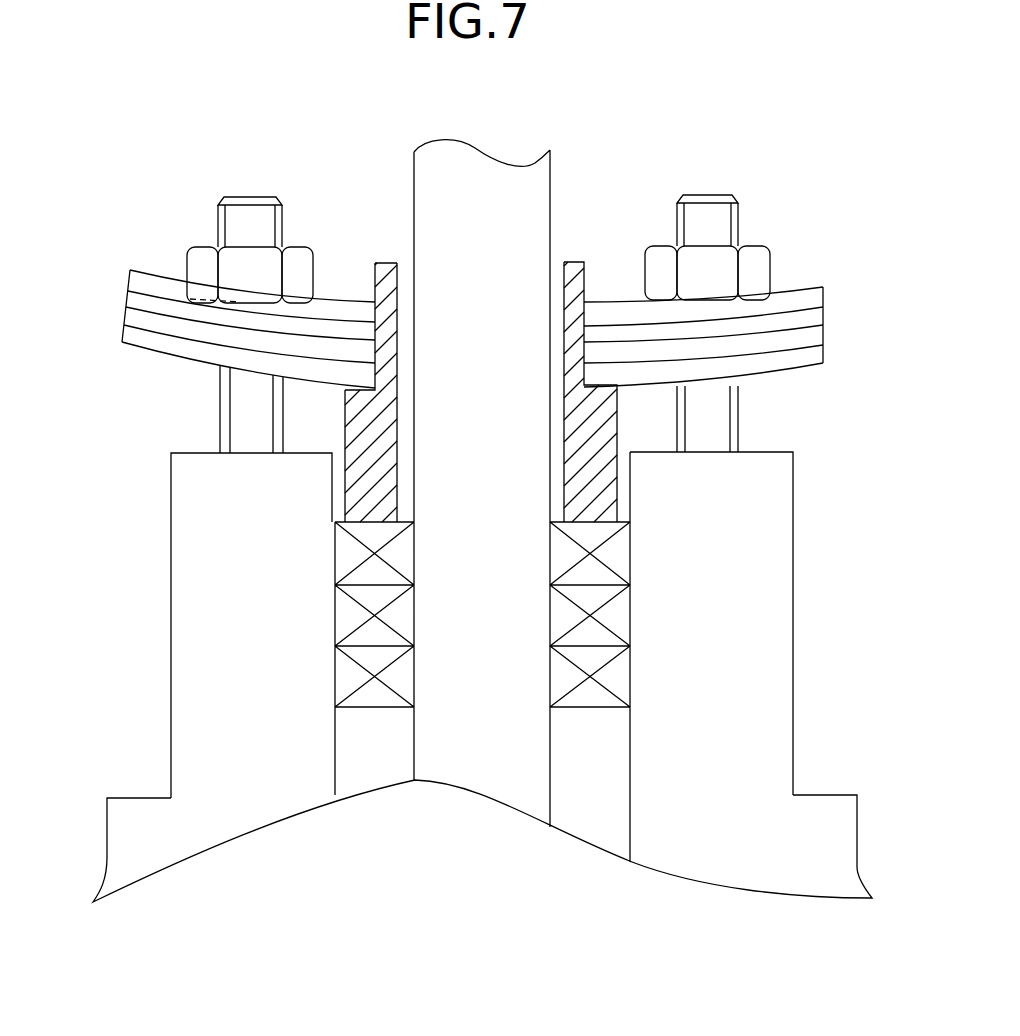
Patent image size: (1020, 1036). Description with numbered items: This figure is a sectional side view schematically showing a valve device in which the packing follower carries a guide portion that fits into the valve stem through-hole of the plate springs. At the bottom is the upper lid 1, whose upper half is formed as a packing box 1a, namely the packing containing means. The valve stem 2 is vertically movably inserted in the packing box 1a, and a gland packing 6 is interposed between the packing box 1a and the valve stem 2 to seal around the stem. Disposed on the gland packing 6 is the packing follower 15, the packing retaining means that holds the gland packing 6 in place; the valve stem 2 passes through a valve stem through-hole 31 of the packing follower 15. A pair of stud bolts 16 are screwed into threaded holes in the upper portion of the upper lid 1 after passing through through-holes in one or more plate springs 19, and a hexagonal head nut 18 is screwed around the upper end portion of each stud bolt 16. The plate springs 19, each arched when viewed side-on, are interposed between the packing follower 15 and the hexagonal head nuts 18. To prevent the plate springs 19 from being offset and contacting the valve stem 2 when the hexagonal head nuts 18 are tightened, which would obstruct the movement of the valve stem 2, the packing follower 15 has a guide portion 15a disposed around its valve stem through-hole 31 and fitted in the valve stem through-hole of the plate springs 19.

The upper lid 1 is at (857, 843).
The packing box 1a is at (635, 735).
The valve stem 2 is at (412, 150).
The gland packing 6 is at (630, 552).
The packing follower 15 is at (620, 432).
The guide portion 15a is at (583, 262).
The stud bolt 16 is at (740, 210).
The hexagonal head nut 18 is at (770, 268).
The plate spring 19 is at (823, 330).
The valve stem through-hole 31 is at (403, 434).